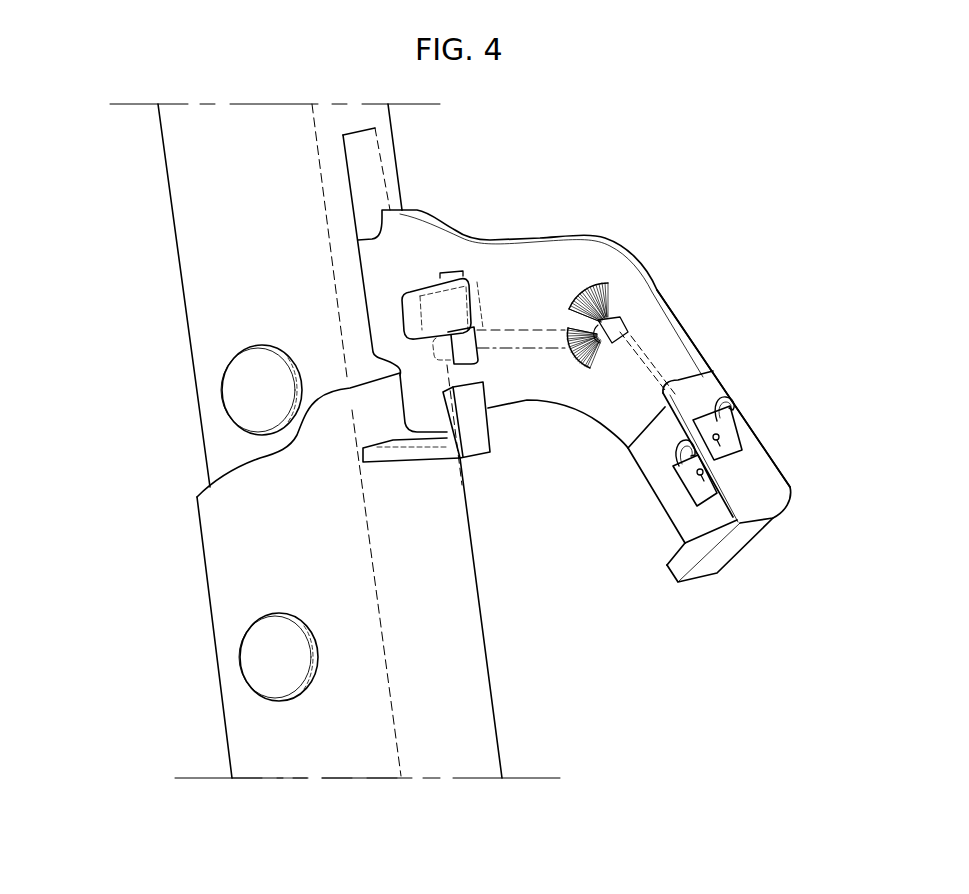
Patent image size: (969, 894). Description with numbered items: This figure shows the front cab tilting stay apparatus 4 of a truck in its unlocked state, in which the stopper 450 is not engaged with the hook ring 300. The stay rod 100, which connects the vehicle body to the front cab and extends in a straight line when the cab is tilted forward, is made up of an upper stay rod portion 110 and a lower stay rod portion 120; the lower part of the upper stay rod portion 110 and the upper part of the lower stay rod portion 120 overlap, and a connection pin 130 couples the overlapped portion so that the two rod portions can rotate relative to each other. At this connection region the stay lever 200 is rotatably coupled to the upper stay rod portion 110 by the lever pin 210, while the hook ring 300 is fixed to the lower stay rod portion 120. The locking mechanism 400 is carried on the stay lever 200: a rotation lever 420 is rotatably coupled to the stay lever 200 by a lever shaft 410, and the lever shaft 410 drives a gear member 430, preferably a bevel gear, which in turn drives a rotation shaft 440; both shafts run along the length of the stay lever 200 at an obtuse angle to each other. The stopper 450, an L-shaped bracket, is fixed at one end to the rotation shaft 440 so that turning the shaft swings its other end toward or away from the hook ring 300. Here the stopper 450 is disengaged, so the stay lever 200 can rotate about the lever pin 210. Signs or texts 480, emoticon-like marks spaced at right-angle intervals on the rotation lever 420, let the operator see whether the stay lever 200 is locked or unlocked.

The front cab tilting stay apparatus 4 is at (708, 347).
The stay rod 100 is at (197, 555).
The upper stay rod portion 110 is at (195, 235).
The lower stay rod portion 120 is at (342, 747).
The connection pin 130 is at (265, 668).
The stay lever 200 is at (642, 307).
The lever pin 210 is at (245, 400).
The hook ring 300 is at (488, 437).
The locking mechanism 400 is at (722, 580).
The lever shaft 410 is at (680, 327).
The rotation lever 420 is at (760, 466).
The gear member 430 is at (608, 313).
The rotation shaft 440 is at (520, 330).
The stopper 450 is at (445, 300).
The signs or texts 480 is at (723, 438).